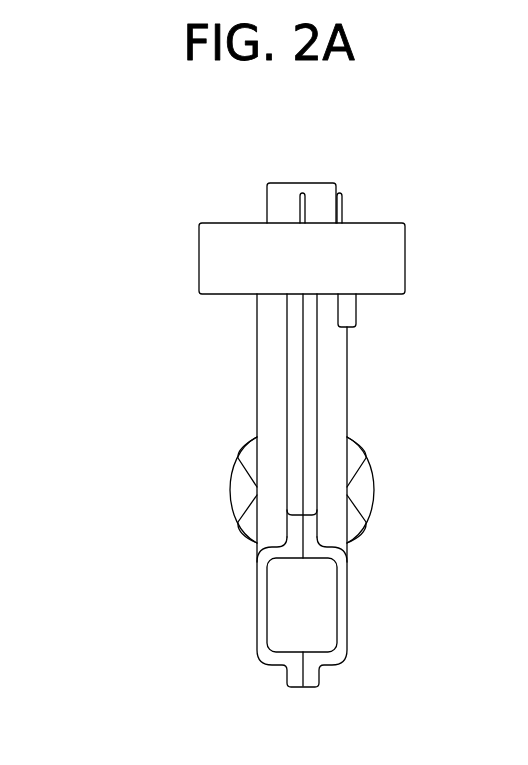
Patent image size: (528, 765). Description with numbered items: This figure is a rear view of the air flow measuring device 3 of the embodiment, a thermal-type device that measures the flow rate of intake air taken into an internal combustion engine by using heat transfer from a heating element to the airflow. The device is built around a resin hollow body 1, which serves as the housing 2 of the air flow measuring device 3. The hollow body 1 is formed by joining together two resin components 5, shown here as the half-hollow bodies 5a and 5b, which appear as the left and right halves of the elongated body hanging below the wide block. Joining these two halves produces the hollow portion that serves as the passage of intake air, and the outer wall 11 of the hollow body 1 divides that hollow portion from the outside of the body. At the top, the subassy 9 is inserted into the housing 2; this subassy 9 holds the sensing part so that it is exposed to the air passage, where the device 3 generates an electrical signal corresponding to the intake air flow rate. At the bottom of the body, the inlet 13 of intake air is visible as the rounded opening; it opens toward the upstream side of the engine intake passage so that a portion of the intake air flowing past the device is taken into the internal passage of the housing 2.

The air flow measuring device 3 is at (147, 188).
The hollow body 1 is at (292, 428).
The housing 2 is at (292, 428).
The subassy 9 is at (315, 192).
The resin components 5 is at (292, 428).
The resin component 5a is at (267, 390).
The resin component 5b is at (330, 391).
The outer wall 11 is at (320, 420).
The inlet 13 is at (322, 610).